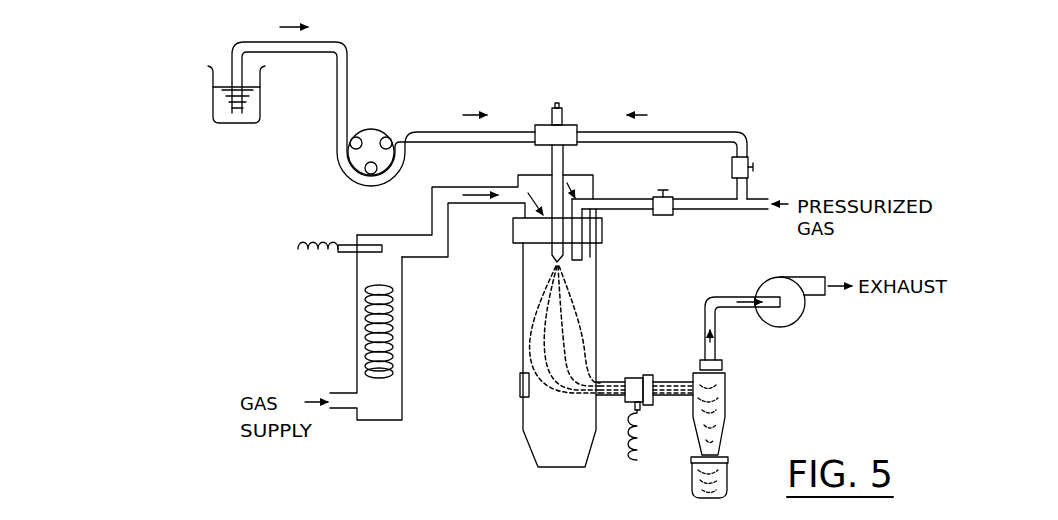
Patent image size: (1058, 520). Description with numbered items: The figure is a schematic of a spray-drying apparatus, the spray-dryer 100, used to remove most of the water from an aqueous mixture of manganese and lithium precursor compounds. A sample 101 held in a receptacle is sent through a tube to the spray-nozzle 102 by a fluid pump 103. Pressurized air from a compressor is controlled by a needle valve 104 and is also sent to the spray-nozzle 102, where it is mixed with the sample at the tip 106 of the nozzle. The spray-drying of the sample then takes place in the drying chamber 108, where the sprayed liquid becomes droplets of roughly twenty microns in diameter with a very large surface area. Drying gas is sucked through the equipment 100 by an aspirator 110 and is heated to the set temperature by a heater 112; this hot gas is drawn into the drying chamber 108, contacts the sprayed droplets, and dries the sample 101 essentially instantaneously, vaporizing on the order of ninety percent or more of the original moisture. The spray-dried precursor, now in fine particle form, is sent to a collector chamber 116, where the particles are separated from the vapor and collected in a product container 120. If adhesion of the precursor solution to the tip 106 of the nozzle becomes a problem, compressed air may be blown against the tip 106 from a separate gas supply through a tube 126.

The spray-dryer 100 is at (455, 492).
The sample 101 is at (213, 107).
The spray-nozzle 102 is at (568, 125).
The fluid pump 103 is at (383, 128).
The needle valve 104 is at (750, 155).
The tip of nozzle 106 is at (555, 258).
The drying chamber 108 is at (597, 328).
The aspirator 110 is at (797, 317).
The heater 112 is at (357, 325).
The collector chamber 116 is at (727, 407).
The product container 120 is at (690, 476).
The tube 126 is at (578, 264).